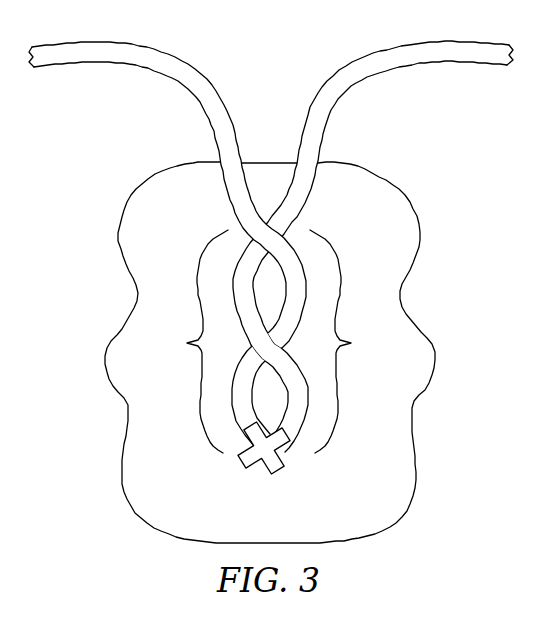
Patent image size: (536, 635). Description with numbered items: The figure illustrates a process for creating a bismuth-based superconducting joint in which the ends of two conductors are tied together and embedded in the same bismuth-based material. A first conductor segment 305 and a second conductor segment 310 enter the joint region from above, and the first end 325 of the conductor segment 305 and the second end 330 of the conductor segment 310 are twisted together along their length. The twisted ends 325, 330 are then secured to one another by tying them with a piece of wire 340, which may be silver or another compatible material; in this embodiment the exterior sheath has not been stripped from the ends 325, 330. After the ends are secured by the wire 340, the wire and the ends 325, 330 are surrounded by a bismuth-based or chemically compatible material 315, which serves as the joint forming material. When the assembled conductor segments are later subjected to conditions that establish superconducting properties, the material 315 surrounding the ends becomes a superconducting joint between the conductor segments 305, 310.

The Bi-2212 conductor segment 305 is at (171, 57).
The Bi-2212 conductor segment 310 is at (393, 70).
The Bi-2212 material or Bi-2212 chemically compatible material 315 is at (121, 399).
The first end 325 is at (190, 341).
The second end 330 is at (347, 341).
The wire 340 is at (270, 458).